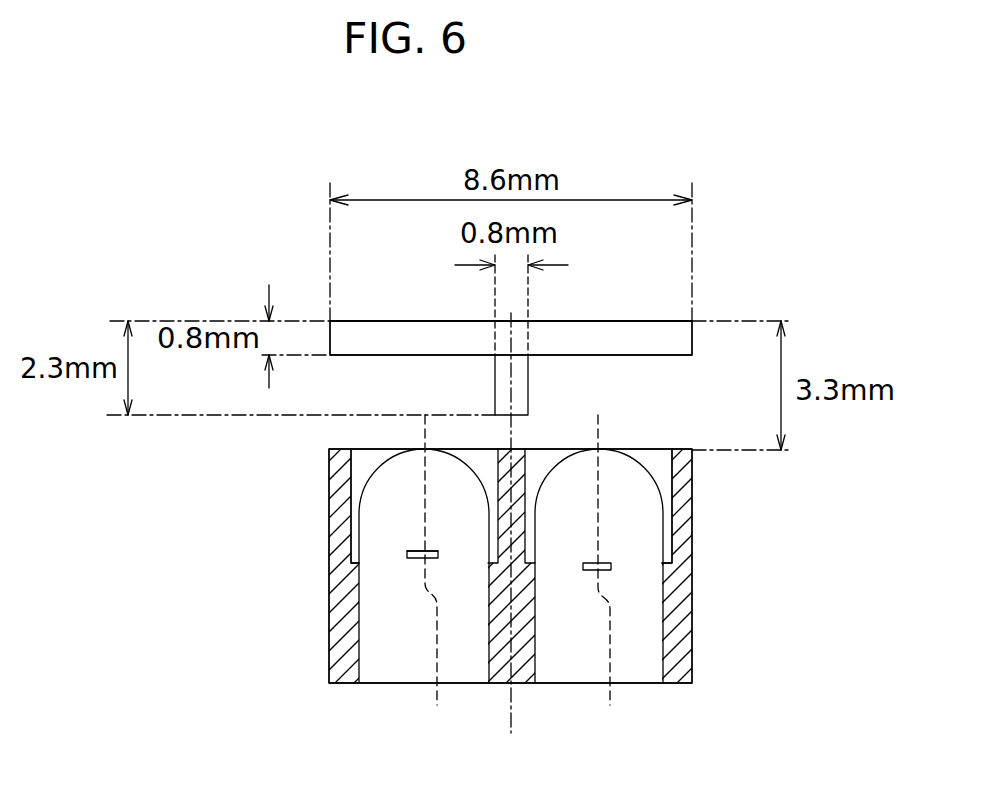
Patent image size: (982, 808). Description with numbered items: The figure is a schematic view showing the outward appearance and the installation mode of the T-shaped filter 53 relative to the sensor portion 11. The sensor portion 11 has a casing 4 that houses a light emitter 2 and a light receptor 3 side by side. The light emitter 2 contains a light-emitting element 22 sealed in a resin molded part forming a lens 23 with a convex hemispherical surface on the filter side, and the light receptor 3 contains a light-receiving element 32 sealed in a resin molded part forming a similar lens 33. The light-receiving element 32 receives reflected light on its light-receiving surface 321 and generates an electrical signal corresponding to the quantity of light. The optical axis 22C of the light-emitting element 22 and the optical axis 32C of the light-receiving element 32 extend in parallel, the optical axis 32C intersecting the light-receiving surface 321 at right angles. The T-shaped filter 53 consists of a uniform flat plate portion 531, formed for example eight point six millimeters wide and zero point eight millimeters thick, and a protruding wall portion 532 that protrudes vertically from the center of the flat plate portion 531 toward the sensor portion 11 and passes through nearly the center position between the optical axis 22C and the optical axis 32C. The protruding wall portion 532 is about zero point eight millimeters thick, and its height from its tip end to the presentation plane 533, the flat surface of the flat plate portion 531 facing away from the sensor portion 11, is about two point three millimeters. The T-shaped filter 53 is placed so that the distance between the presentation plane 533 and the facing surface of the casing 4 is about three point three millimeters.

The light emitter 2 is at (648, 471).
The light receptor 3 is at (375, 472).
The casing 4 is at (693, 578).
The sensor portion 11 is at (712, 657).
The light-emitting element 22 is at (595, 572).
The optical axis of the light-emitting element 22C is at (620, 577).
The lens 23 is at (663, 523).
The light-receiving element 32 is at (418, 560).
The optical axis of the light-receiving element 32C is at (445, 577).
The lens 33 is at (358, 524).
The T-shaped filter 53 is at (697, 313).
The light-receiving surface 321 is at (413, 551).
The flat plate portion 531 is at (663, 347).
The protruding wall portion 532 is at (530, 387).
The presentation plane 533 is at (614, 321).